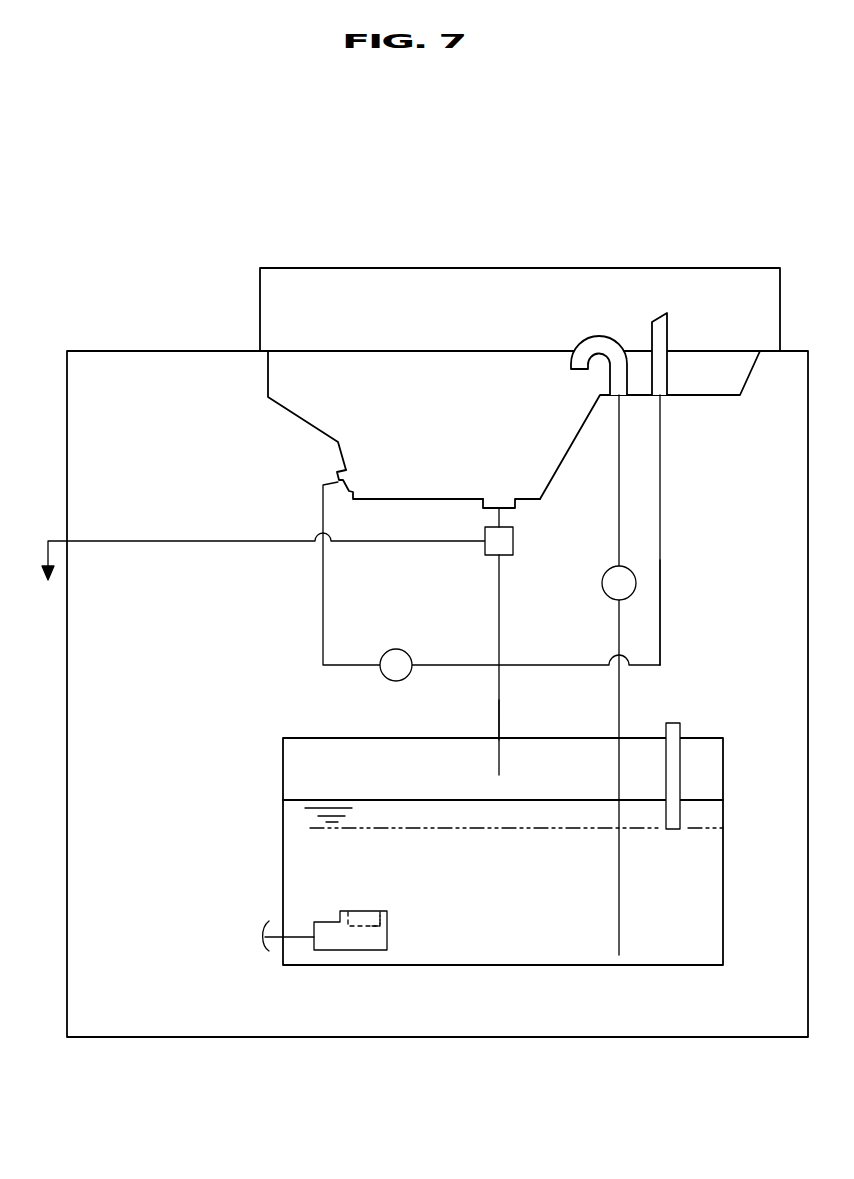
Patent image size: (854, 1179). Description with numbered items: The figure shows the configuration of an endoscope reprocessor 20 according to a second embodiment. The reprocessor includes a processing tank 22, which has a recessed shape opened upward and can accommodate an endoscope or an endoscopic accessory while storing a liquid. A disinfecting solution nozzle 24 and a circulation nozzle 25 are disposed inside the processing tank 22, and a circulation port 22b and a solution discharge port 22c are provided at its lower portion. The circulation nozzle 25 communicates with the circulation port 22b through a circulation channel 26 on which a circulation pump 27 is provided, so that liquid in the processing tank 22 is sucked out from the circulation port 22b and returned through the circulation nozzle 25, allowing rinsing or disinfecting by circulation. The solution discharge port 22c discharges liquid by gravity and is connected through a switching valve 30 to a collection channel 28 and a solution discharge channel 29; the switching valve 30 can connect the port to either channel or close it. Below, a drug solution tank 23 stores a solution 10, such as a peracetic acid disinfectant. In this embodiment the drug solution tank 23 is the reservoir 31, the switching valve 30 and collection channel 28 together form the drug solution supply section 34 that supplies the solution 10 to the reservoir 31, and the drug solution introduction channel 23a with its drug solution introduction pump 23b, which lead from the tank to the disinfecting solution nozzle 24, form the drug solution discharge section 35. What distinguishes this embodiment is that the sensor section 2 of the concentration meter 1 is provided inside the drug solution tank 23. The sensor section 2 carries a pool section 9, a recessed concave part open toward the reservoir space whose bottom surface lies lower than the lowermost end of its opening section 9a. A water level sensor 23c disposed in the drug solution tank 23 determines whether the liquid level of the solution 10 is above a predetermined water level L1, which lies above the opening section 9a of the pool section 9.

The endoscope reprocessor 20 is at (206, 248).
The processing tank 22 is at (326, 426).
The circulation port 22b is at (344, 471).
The solution discharge port 22c is at (494, 507).
The disinfecting solution nozzle 24 is at (577, 342).
The circulation nozzle 25 is at (654, 320).
The drug solution introduction channel 23a is at (618, 513).
The drug solution introduction pump 23b is at (606, 579).
The water level sensor 23c is at (681, 767).
The drug solution tank 23 is at (283, 778).
The reservoir 31 is at (453, 851).
The solution discharge channel 29 is at (248, 540).
The switching valve 30 is at (514, 556).
The collection channel 28 is at (498, 694).
The circulation channel 26 is at (464, 661).
The circulation pump 27 is at (390, 648).
The drug solution supply section 34 is at (464, 715).
The drug solution discharge section 35 is at (638, 556).
The solution 10 is at (584, 799).
The predetermined water level L1 is at (640, 829).
The concentration meter 1 is at (275, 893).
The sensor section 2 is at (344, 911).
The pool section 9 is at (362, 921).
The opening section 9a is at (378, 911).